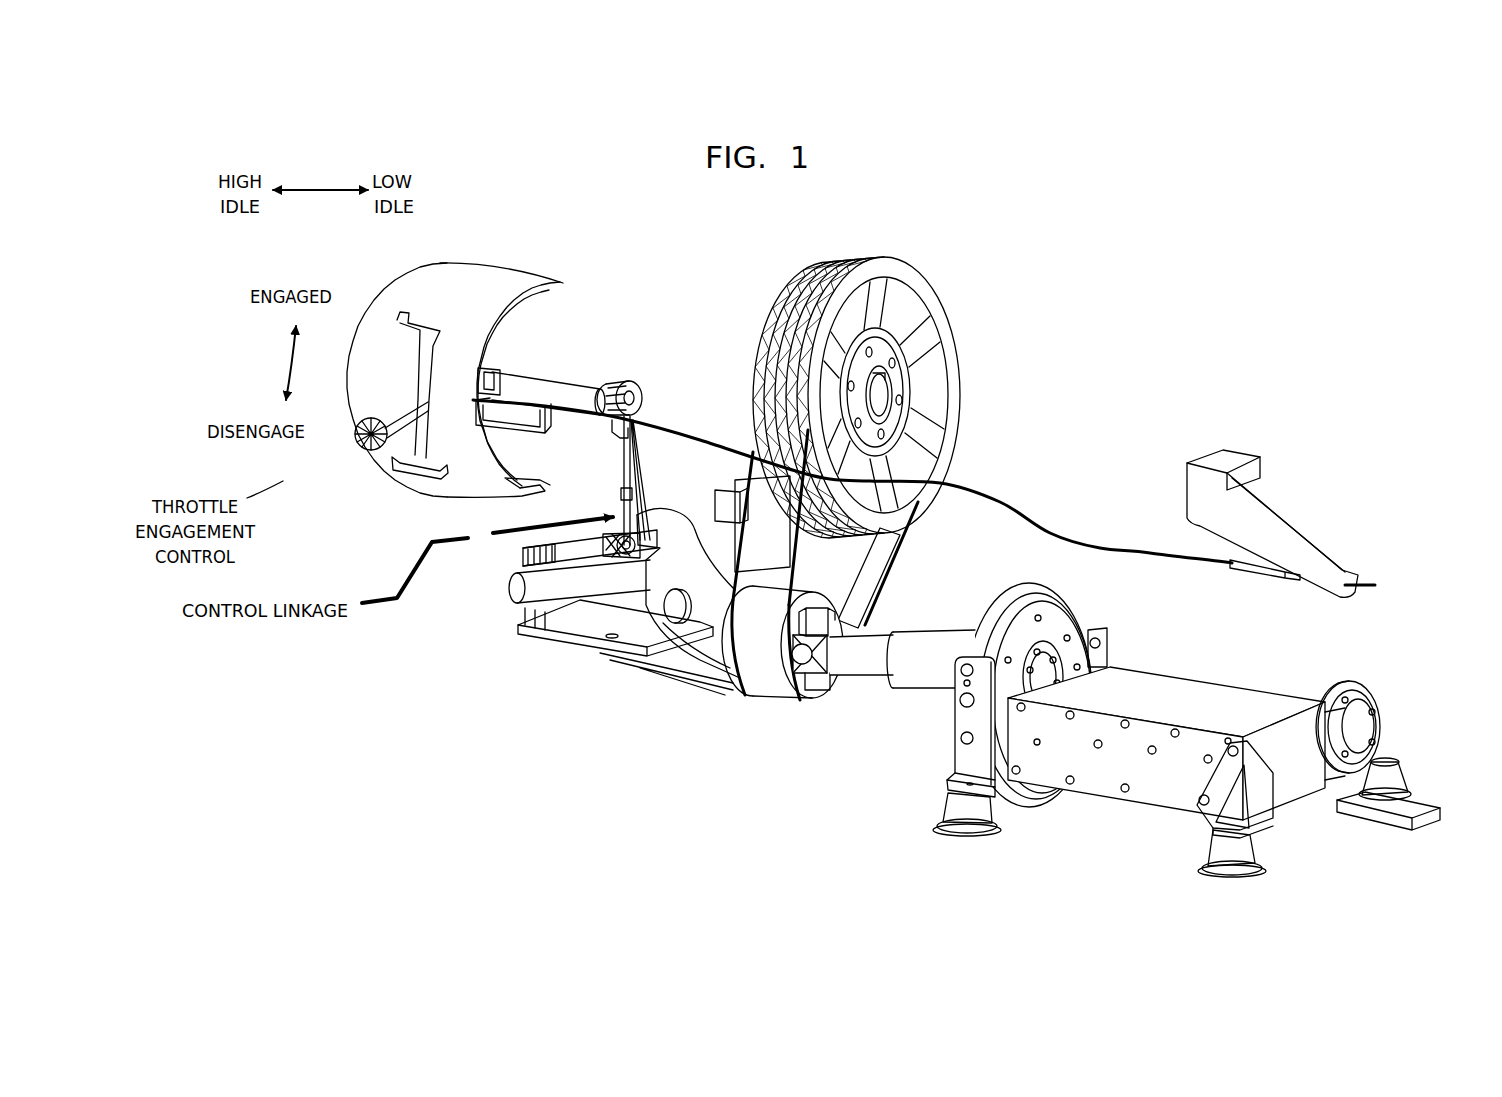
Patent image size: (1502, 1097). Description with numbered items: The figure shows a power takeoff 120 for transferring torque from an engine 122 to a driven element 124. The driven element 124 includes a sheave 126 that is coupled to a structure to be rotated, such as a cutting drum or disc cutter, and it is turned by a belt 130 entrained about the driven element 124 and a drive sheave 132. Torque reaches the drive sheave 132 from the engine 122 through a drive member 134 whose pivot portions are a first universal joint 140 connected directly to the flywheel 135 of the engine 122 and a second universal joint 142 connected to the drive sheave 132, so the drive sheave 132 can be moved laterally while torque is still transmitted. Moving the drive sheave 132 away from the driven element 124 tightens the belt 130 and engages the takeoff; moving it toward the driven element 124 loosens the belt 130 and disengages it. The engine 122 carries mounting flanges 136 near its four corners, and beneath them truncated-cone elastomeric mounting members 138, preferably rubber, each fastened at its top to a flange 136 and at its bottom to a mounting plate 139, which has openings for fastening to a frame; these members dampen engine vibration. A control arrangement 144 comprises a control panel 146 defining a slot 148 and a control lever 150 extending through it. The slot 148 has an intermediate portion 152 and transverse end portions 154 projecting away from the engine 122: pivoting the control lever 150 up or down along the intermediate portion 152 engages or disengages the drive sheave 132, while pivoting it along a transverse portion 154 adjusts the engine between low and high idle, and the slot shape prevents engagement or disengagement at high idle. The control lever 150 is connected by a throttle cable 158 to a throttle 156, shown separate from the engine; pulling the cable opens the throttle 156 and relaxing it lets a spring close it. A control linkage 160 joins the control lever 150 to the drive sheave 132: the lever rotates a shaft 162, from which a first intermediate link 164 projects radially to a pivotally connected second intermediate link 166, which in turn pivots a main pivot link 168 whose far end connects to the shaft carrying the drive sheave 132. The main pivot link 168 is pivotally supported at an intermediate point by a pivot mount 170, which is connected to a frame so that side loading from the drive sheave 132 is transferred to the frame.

The power takeoff 120 is at (840, 795).
The engine 122 is at (1160, 672).
The driven element 124 is at (947, 322).
The sheave 126 is at (925, 283).
The belt 130 is at (905, 548).
The drive sheave 132 is at (780, 702).
The drive member 134 is at (930, 630).
The flywheel 135 is at (1075, 622).
The mounting flanges 136 is at (992, 787).
The elastomeric mounting members 138 is at (995, 808).
The mounting plates 139 is at (940, 822).
The first universal joint 140 is at (955, 668).
The second universal joint 142 is at (820, 683).
The control arrangement 144 is at (438, 228).
The control panel 146 is at (480, 265).
The slot 148 is at (456, 332).
The control lever 150 is at (360, 438).
The intermediate portion 152 is at (486, 402).
The transverse end portions 154 is at (397, 320).
The throttle 156 is at (1287, 517).
The throttle cable 158 is at (1068, 552).
The control linkage 160 is at (648, 470).
The shaft 162 is at (545, 387).
The first intermediate link 164 is at (622, 392).
The second intermediate link 166 is at (622, 463).
The main pivot link 168 is at (690, 625).
The pivot mount 170 is at (568, 612).